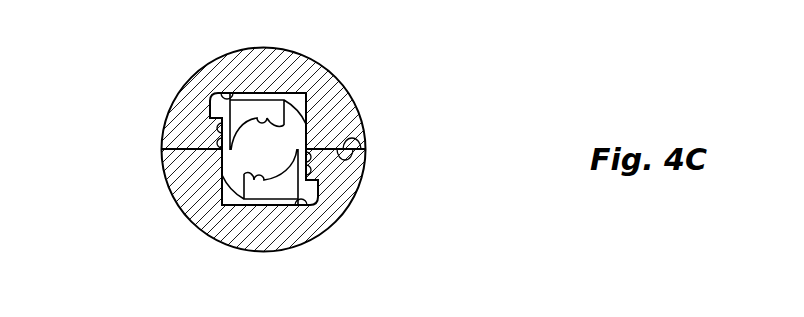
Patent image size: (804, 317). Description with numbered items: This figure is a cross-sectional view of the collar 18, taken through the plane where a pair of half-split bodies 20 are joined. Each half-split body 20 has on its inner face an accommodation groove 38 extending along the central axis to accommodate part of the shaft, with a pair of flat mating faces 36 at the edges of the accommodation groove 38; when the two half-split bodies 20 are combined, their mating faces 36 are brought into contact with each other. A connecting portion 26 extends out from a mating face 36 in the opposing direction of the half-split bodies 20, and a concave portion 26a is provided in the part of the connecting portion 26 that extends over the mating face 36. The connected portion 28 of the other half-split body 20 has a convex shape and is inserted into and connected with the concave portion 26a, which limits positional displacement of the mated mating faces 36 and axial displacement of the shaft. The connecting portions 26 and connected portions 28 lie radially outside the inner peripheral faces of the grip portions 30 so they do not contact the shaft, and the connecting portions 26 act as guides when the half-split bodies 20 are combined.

The collar 18 is at (284, 283).
The half-split body 20 is at (295, 63).
The connecting portion 26 is at (188, 116).
The concave portion 26a is at (209, 124).
The connected portion 28 is at (218, 156).
The grip portion 30 is at (286, 123).
The mating face 36 is at (355, 140).
The accommodation groove 38 is at (222, 90).